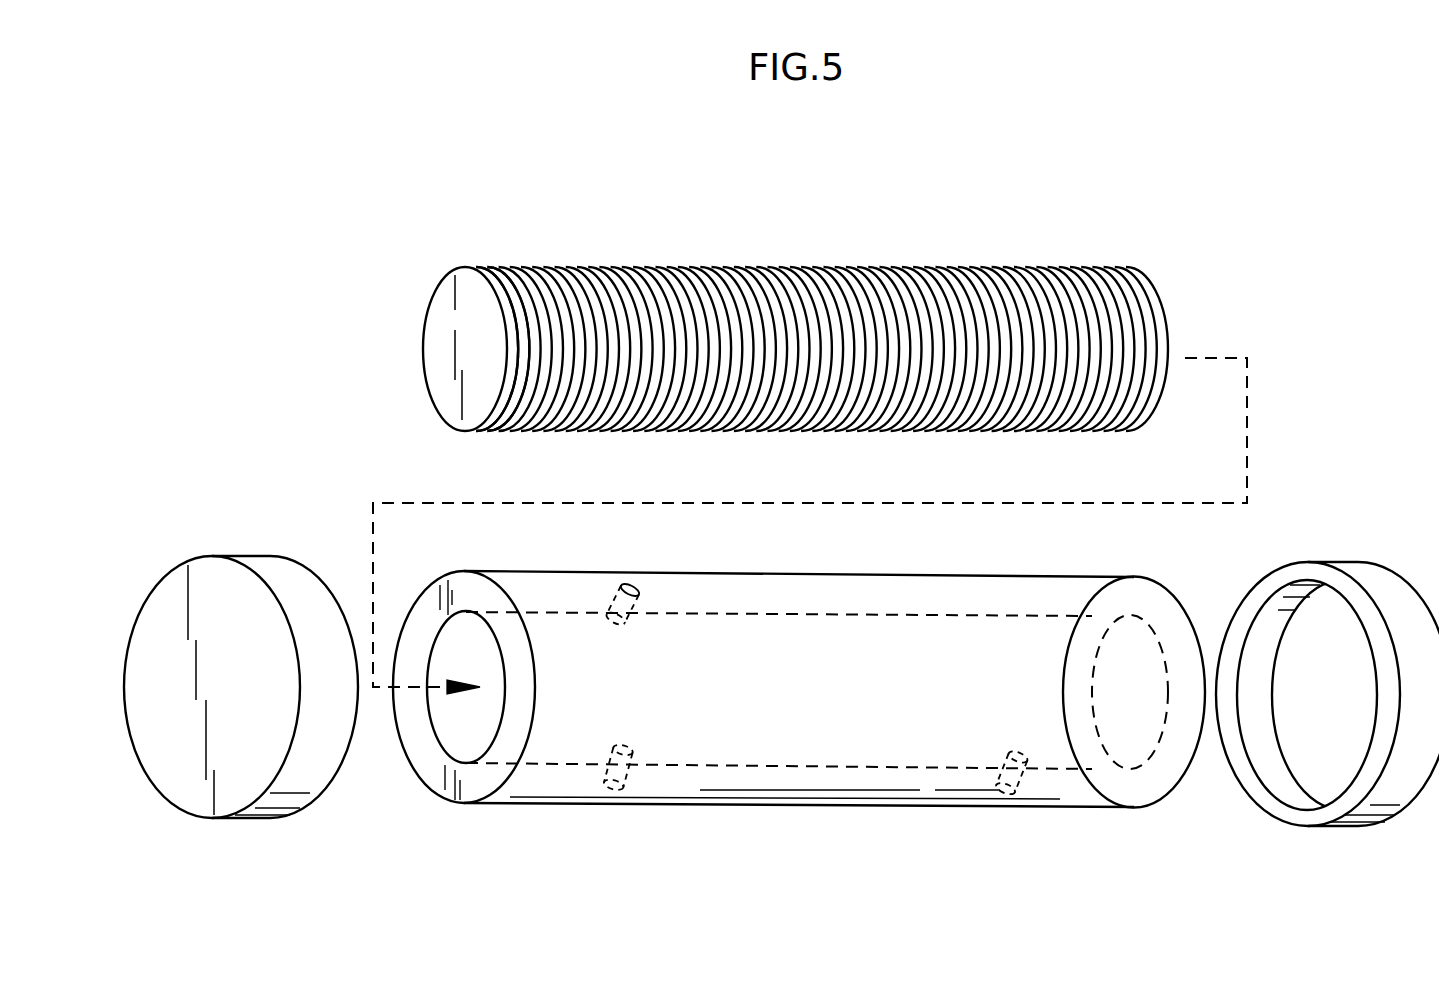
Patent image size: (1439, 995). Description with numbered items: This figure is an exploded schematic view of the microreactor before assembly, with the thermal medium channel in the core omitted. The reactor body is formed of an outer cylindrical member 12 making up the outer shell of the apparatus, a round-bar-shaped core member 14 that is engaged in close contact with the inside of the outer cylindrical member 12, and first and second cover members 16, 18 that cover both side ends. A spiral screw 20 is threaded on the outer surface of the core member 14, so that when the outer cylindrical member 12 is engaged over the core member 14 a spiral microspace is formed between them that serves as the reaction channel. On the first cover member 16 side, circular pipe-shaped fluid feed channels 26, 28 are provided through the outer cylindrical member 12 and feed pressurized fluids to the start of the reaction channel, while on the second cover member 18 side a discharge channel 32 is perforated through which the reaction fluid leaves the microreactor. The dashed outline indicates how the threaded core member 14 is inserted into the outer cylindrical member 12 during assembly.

The outer cylindrical member 12 is at (1030, 576).
The core member 14 is at (940, 263).
The first cover member 16 is at (246, 597).
The second cover member 18 is at (1357, 565).
The spiral screw 20 is at (545, 265).
The fluid feed channel 26 is at (645, 570).
The fluid feed channel 28 is at (621, 805).
The discharge channel 32 is at (1017, 800).